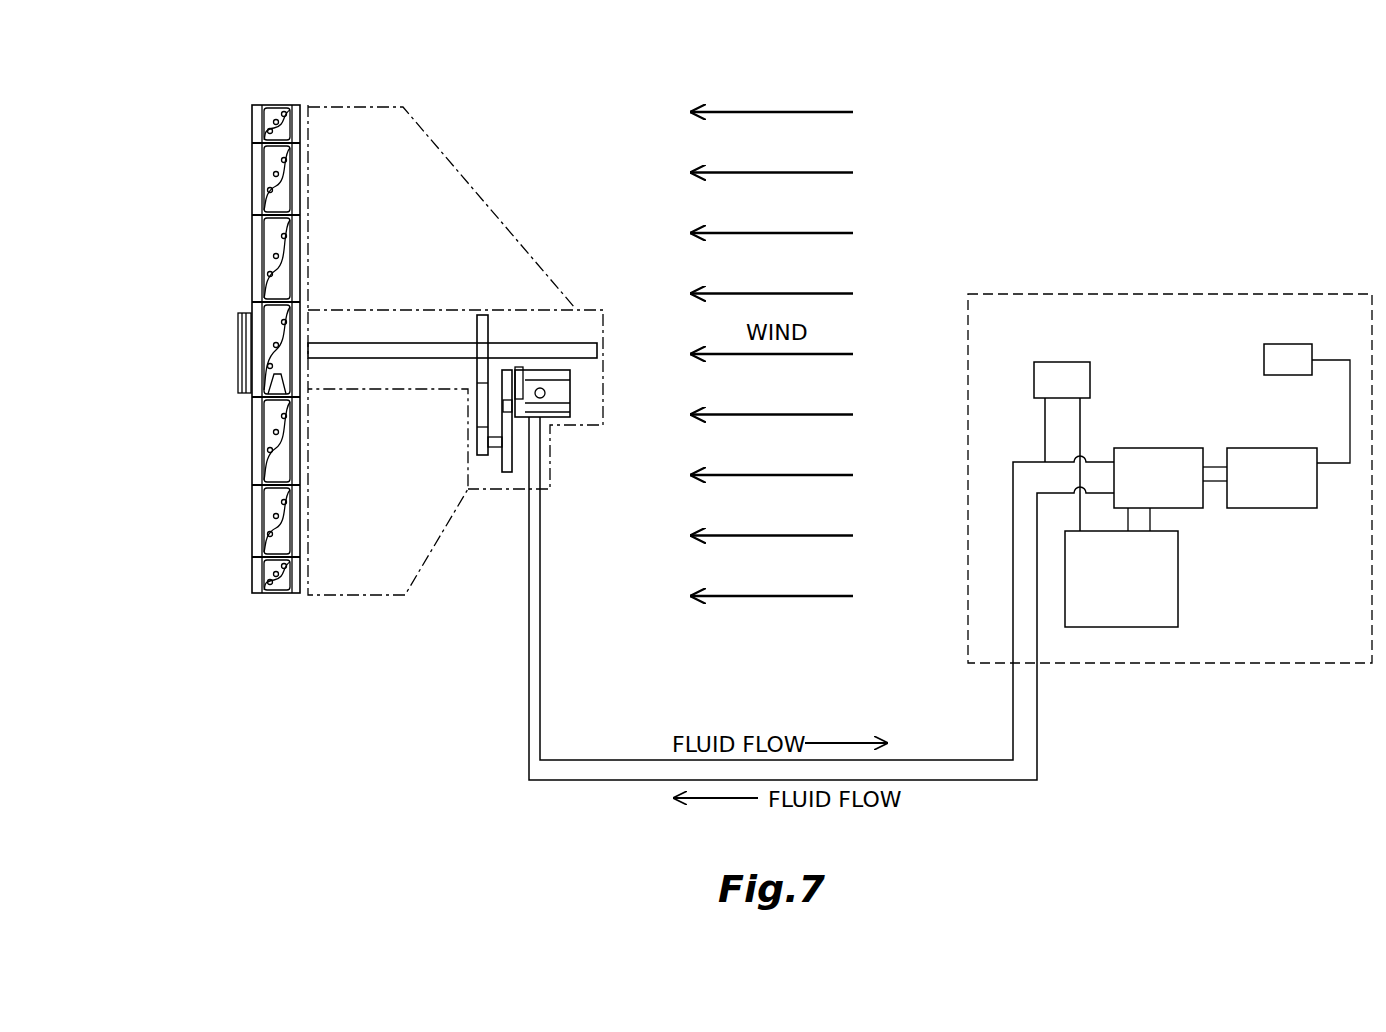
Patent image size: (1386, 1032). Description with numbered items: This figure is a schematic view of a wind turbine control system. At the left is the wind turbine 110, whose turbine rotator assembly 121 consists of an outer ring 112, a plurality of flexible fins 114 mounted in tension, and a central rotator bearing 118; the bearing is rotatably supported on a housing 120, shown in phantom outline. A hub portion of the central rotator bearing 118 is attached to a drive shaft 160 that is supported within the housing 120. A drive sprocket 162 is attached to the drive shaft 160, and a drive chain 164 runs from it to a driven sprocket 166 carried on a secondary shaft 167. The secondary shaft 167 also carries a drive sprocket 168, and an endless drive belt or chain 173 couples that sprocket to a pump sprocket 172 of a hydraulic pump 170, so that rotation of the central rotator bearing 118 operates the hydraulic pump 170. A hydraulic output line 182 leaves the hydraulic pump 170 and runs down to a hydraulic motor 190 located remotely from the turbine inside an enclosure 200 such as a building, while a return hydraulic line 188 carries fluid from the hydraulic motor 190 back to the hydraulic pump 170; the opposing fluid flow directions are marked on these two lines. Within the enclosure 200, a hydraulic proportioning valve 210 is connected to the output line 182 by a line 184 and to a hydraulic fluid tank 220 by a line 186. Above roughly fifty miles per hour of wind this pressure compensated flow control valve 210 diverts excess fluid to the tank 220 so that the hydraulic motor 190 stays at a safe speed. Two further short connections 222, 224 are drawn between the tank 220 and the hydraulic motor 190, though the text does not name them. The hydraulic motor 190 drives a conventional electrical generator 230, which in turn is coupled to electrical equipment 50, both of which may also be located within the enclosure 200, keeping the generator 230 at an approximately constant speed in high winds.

The electrical equipment 50 is at (1264, 362).
The wind turbine 110 is at (315, 690).
The outer ring 112 is at (272, 597).
The flexible fins 114 is at (301, 104).
The central rotator bearing 118 is at (238, 400).
The housing 120 is at (468, 178).
The turbine rotator assembly 121 is at (236, 545).
The drive shaft 160 is at (344, 343).
The drive sprocket 162 is at (476, 318).
The drive chain 164 is at (480, 403).
The driven sprocket 166 is at (481, 457).
The secondary shaft 167 is at (493, 447).
The drive sprocket 168 is at (508, 410).
The hydraulic pump 170 is at (546, 369).
The pump sprocket 172 is at (517, 366).
The endless drive belt or chain 173 is at (513, 410).
The hydraulic output line 182 is at (546, 577).
The line 184 is at (1043, 433).
The line 186 is at (1082, 420).
The return hydraulic line 188 is at (935, 780).
The hydraulic motor 190 is at (1176, 448).
The enclosure 200 is at (1063, 292).
The hydraulic proportioning valve 210 is at (1072, 358).
The hydraulic fluid tank 220 is at (1180, 558).
The reservoir line 222 is at (1148, 515).
The reservoir connector 224 is at (1151, 517).
The electrical generator 230 is at (1246, 447).